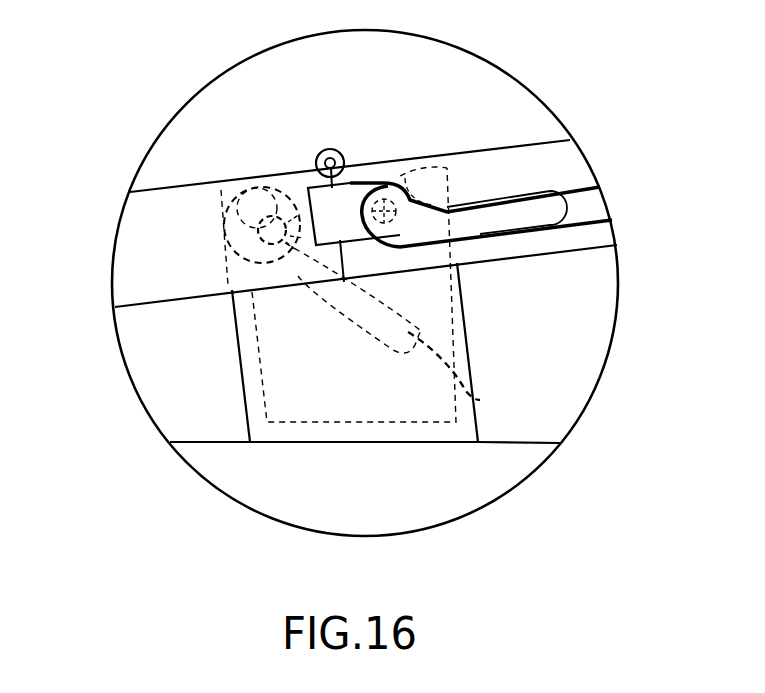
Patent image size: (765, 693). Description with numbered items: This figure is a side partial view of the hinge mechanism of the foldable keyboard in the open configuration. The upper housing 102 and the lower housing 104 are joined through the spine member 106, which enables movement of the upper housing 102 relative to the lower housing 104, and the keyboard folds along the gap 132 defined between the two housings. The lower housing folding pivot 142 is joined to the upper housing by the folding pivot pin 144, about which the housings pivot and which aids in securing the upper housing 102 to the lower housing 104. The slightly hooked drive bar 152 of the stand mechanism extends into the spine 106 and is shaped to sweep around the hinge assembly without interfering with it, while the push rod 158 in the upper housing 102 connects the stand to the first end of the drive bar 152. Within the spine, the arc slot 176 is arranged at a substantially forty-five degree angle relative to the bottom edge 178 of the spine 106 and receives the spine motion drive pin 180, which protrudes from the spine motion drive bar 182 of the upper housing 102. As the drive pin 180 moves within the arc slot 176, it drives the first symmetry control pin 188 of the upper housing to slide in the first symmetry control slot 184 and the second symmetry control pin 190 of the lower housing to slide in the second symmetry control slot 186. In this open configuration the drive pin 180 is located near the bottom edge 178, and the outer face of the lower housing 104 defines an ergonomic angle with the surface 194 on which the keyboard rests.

The upper housing 102 is at (557, 162).
The lower housing 104 is at (135, 232).
The spine member 106 is at (345, 444).
The gap 132 is at (330, 150).
The lower housing folding pivot 142 is at (343, 152).
The folding pivot pin 144 is at (316, 152).
The drive bar 152 is at (483, 222).
The push rod 158 is at (583, 208).
The arc slot 176 is at (480, 400).
The bottom edge 178 is at (247, 405).
The spine motion drive pin 180 is at (262, 262).
The spine motion drive bar 182 is at (253, 188).
The first symmetry control slot 184 is at (447, 168).
The second symmetry control slot 186 is at (262, 187).
The first symmetry control pin 188 is at (385, 178).
The second symmetry control pin 190 is at (244, 252).
The surface 194 is at (517, 444).